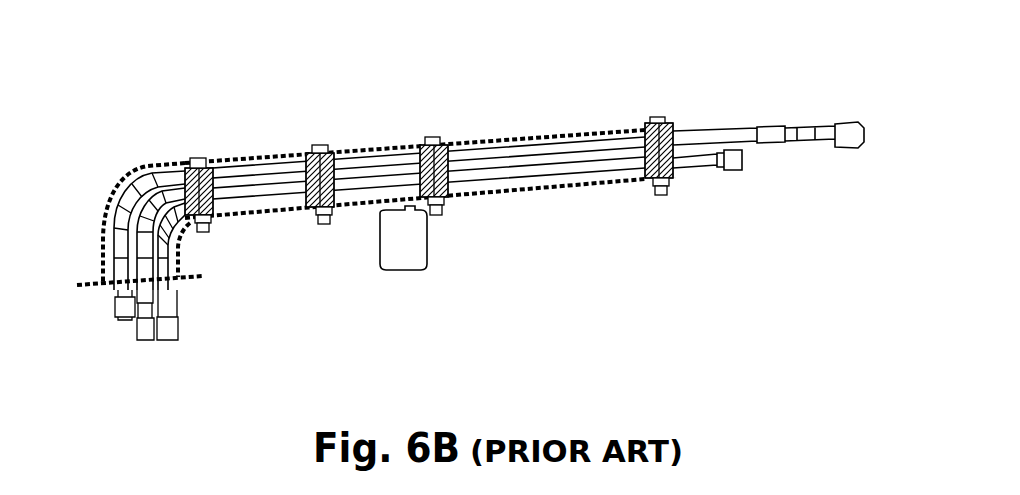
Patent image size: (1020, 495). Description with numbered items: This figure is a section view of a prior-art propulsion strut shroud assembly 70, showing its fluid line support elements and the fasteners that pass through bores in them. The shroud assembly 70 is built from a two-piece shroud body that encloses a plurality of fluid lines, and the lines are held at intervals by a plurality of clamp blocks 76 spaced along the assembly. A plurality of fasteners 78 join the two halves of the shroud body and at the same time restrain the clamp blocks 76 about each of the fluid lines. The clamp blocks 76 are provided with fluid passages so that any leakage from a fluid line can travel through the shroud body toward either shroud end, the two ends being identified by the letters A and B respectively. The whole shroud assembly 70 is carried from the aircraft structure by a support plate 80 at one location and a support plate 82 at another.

The propulsion strut shroud assembly 70 is at (507, 118).
The clamp block 76 is at (410, 147).
The fastener 78 is at (310, 150).
The support plate 80 is at (202, 278).
The support plate 82 is at (418, 249).
The shroud end A is at (176, 277).
The shroud end B is at (676, 177).